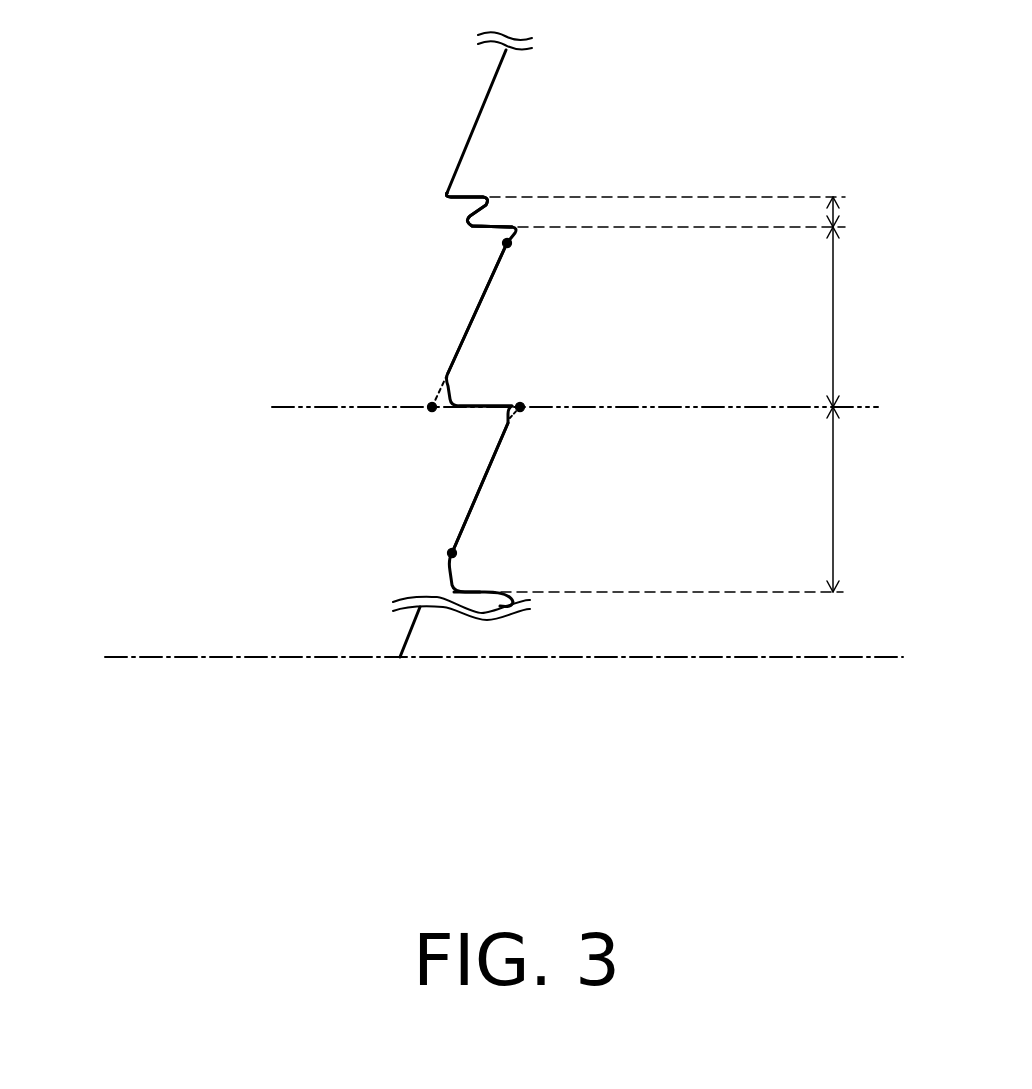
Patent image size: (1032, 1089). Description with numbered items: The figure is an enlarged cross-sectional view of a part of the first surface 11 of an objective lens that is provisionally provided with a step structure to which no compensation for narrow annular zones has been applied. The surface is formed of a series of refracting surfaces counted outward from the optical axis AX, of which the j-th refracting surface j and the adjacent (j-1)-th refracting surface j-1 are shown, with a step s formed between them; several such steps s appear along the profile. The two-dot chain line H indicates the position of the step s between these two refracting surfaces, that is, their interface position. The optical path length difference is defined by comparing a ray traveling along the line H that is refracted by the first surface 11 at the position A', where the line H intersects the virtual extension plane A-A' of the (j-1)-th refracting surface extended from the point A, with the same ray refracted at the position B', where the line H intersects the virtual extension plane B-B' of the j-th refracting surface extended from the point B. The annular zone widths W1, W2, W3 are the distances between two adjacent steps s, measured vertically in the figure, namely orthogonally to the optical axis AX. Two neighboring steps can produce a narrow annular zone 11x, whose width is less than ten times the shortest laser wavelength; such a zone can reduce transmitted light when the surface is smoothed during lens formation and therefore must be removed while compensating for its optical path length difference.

The first surface 11 is at (327, 323).
The narrow annular zone 11x is at (425, 187).
The step s is at (447, 210).
The j-th refracting surface j is at (472, 317).
The (j-1)-th refracting surface j-1 is at (477, 500).
The point B of virtual extension plane B-B' B is at (541, 265).
The position B' is at (415, 371).
The position A' is at (546, 438).
The point A of virtual extension plane A-A' A is at (494, 534).
The two-dot chain line H is at (596, 406).
The annular zone width W1 is at (834, 502).
The annular zone width W2 is at (834, 313).
The annular zone width W3 is at (839, 205).
The optical axis AX is at (472, 655).